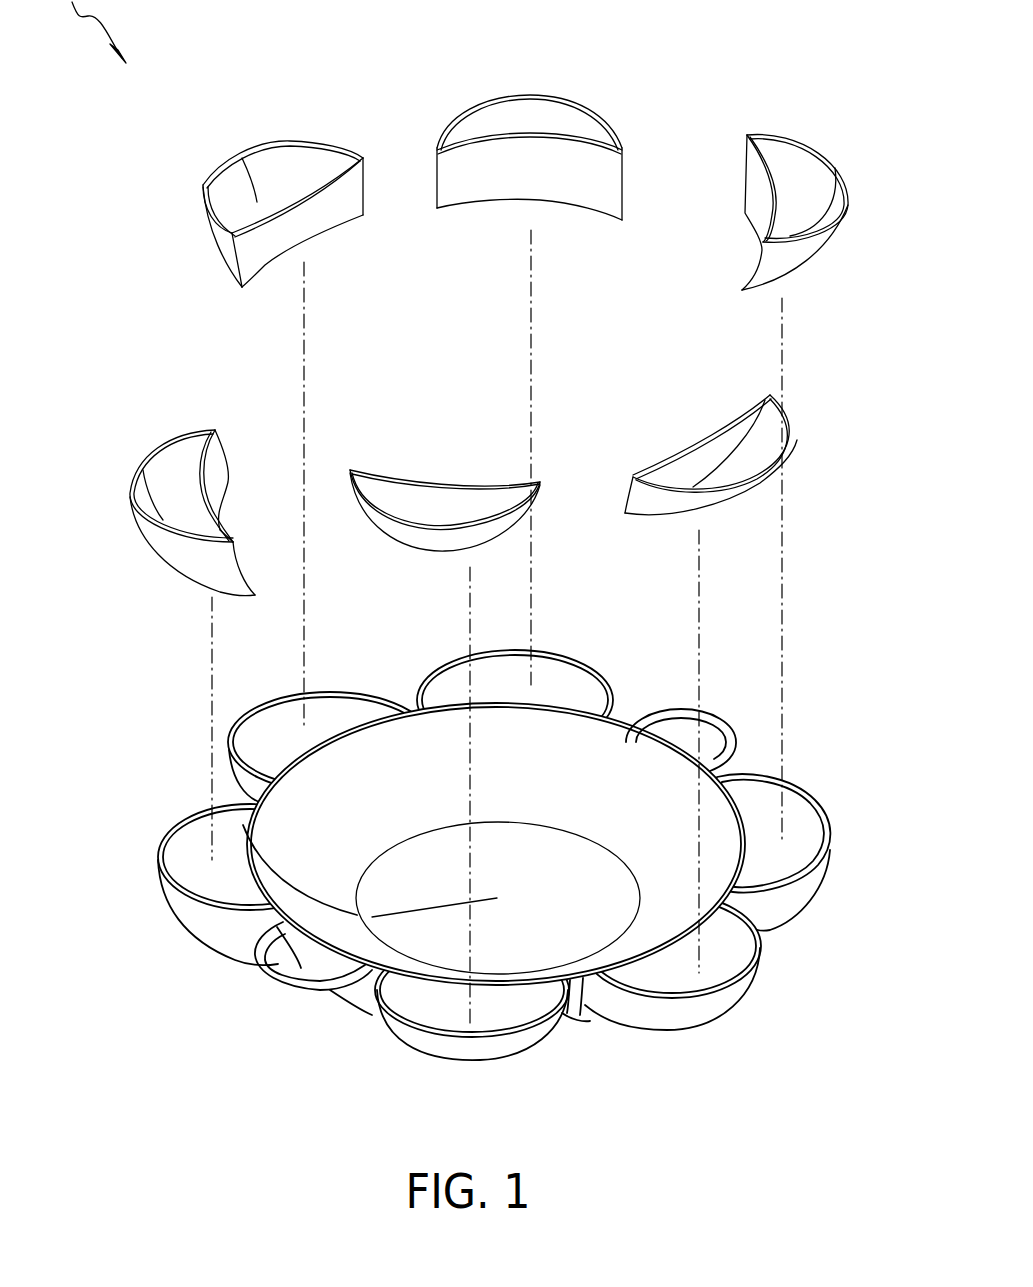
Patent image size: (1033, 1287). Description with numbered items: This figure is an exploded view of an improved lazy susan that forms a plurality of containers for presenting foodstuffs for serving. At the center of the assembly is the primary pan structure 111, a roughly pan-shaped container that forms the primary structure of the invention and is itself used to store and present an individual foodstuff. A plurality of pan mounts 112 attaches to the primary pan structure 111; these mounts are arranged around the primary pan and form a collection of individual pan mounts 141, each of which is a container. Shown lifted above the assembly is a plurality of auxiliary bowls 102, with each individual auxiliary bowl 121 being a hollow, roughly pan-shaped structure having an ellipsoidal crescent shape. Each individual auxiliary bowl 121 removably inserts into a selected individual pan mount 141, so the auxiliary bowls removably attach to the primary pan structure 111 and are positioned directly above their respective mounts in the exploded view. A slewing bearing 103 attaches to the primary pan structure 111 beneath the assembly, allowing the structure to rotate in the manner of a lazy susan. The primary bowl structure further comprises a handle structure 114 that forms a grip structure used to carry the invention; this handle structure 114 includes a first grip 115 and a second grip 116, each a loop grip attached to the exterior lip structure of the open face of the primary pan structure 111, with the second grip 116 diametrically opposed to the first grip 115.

The plurality of auxiliary bowls 102 is at (868, 132).
The individual auxiliary bowl 121 is at (130, 492).
The slewing bearing 103 is at (227, 1110).
The primary pan structure 111 is at (877, 565).
The plurality of pan mounts 112 is at (802, 828).
The individual pan mount 141 is at (182, 860).
The handle structure 114 is at (578, 745).
The first grip 115 is at (673, 713).
The second grip 116 is at (430, 917).